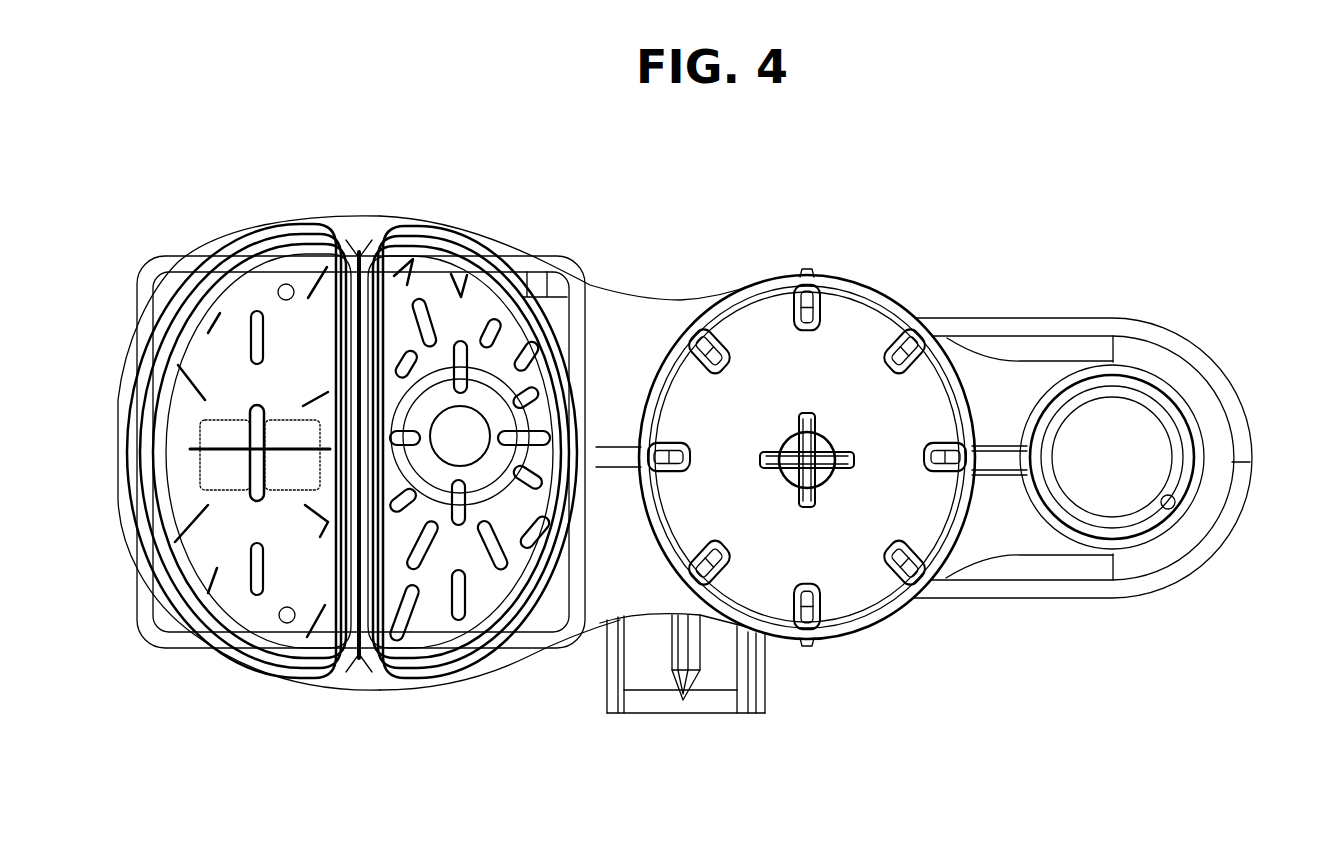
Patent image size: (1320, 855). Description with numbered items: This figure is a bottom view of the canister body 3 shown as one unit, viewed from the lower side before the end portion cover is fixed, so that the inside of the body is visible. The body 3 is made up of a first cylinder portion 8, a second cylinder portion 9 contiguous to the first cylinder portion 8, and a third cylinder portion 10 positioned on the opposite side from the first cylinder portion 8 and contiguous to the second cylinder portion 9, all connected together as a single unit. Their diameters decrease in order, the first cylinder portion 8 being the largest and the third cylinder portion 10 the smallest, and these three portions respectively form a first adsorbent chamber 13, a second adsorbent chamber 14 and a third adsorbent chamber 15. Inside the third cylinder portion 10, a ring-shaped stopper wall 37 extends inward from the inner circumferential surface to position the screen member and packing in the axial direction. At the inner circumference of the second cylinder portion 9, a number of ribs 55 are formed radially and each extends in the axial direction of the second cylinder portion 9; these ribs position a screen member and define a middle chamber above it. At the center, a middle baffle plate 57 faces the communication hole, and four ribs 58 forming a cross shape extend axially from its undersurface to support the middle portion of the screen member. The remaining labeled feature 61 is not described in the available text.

The body 3 is at (628, 308).
The first cylinder portion 8 is at (350, 687).
The second cylinder portion 9 is at (897, 607).
The third cylinder portion 10 is at (1195, 438).
The first adsorbent chamber 13 is at (257, 613).
The second adsorbent chamber 14 is at (832, 606).
The third adsorbent chamber 15 is at (1177, 502).
The stopper wall 37 is at (1140, 527).
The ribs 55 is at (807, 313).
The middle baffle plate 57 is at (823, 443).
The ribs 58 is at (822, 483).
The ribs 61 is at (804, 416).